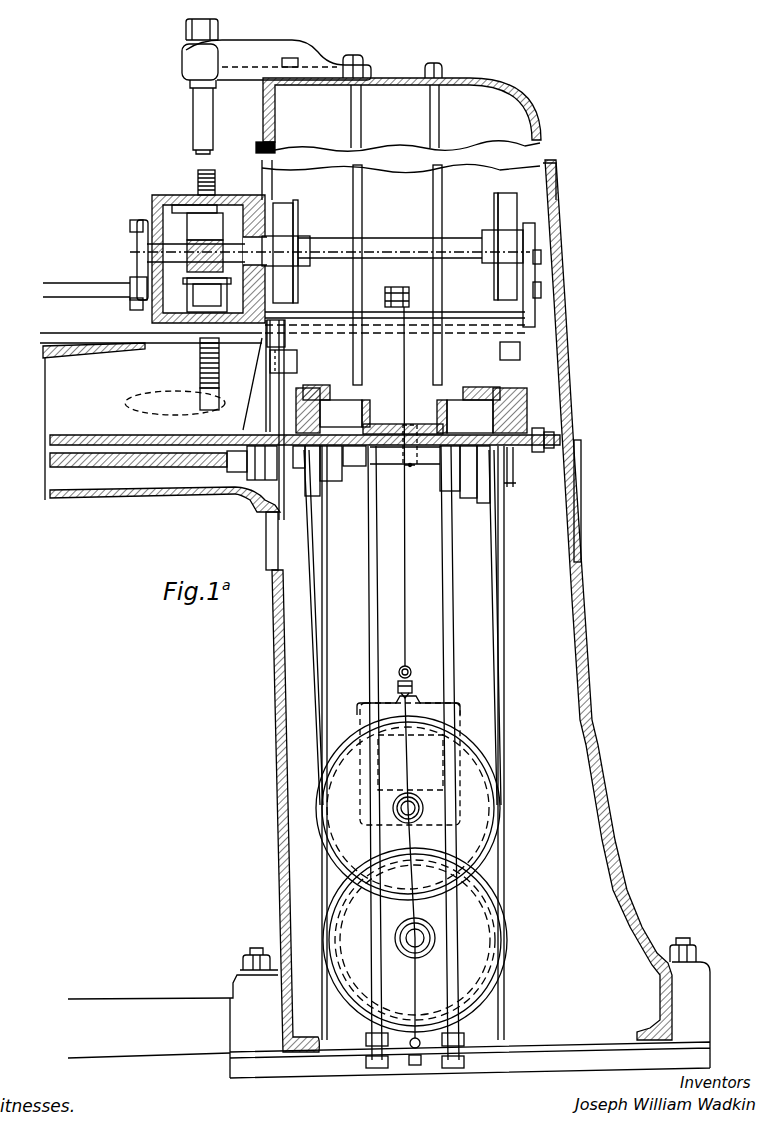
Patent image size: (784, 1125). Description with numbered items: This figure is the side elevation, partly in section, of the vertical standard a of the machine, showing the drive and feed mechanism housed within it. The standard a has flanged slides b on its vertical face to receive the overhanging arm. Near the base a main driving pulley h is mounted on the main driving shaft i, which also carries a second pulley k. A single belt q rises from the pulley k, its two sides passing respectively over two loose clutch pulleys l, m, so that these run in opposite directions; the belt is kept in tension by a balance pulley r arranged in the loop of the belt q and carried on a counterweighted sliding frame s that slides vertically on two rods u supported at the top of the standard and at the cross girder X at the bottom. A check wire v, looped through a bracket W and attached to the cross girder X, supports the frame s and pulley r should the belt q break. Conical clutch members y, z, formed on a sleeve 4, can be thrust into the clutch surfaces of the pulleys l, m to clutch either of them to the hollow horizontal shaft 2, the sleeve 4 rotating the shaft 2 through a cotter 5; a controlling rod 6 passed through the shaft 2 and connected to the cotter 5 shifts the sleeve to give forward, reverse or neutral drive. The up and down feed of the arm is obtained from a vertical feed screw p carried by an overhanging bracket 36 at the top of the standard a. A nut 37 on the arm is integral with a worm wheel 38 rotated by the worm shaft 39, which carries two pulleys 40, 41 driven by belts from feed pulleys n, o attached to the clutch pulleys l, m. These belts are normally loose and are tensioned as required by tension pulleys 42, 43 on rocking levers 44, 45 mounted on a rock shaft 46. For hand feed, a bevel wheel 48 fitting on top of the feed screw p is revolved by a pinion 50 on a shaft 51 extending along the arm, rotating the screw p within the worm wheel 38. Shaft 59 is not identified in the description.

The overhanging bracket 36 is at (248, 58).
The vertical standard a is at (472, 80).
The flanged slides b is at (268, 146).
The rods u is at (433, 185).
The vertical feed screw p is at (198, 186).
The worm shaft 39 is at (148, 228).
The worm wheel 38 is at (178, 245).
The nut 37 is at (212, 235).
The pulley 40 is at (285, 226).
The shaft 59 is at (408, 250).
The pulley 41 is at (508, 218).
The shaft 51 is at (113, 285).
The bevel wheel 48 is at (207, 295).
The pinion 50 is at (209, 259).
The rock shaft 46 is at (500, 318).
The rocking lever 44 is at (264, 348).
The tension pulley 42 is at (292, 362).
The bracket W is at (397, 287).
The rocking lever 45 is at (515, 333).
The tension pulley 43 is at (504, 350).
The feed pulley n is at (287, 512).
The clutch pulley l is at (308, 388).
The conical clutch member y is at (352, 402).
The sleeve 4 is at (301, 427).
The cotter 5 is at (408, 424).
The conical clutch member z is at (463, 396).
The clutch pulley m is at (488, 388).
The feed pulley o is at (517, 405).
The horizontal shaft 2 is at (386, 447).
The controlling rod 6 is at (430, 447).
The check wire v is at (406, 520).
The belt q is at (314, 618).
The sliding frame s is at (433, 722).
The tension pulley r is at (463, 778).
The main driving pulley h is at (502, 944).
The second pulley k is at (495, 975).
The main driving shaft i is at (410, 945).
The cross girder X is at (560, 1048).